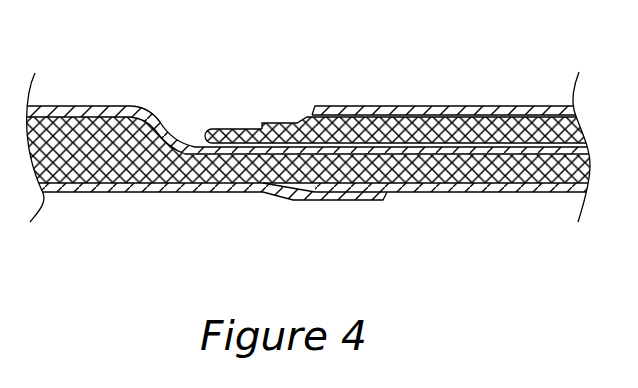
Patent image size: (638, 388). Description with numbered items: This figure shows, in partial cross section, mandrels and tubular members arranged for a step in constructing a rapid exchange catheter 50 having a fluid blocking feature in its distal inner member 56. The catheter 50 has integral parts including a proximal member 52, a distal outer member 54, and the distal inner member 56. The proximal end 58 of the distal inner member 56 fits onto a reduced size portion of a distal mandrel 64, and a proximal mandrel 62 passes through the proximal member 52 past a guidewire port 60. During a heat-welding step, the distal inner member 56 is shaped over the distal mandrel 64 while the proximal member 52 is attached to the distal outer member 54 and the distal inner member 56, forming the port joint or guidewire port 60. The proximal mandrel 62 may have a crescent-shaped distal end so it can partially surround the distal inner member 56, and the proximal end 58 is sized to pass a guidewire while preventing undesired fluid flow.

The catheter 50 is at (283, 240).
The proximal member 52 is at (145, 193).
The distal outer member 54 is at (493, 193).
The distal inner member 56 is at (398, 117).
The proximal end 58 is at (280, 125).
The guidewire port 60 is at (198, 68).
The proximal mandrel 62 is at (233, 190).
The distal mandrel 64 is at (467, 115).